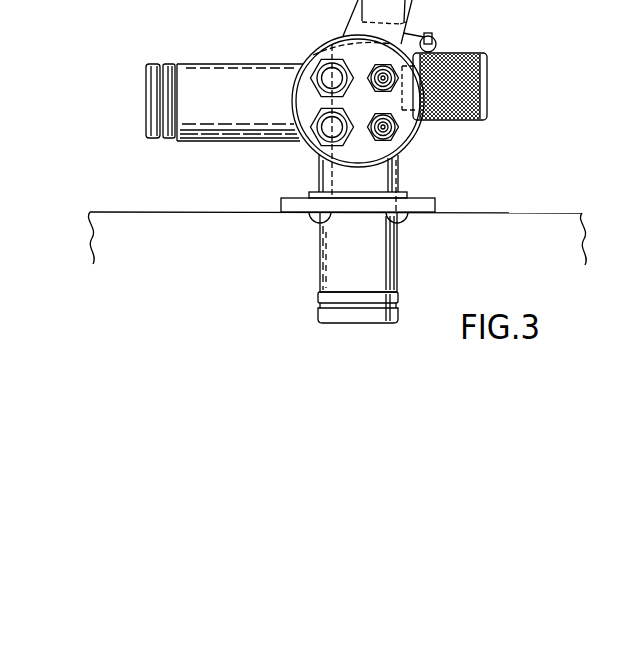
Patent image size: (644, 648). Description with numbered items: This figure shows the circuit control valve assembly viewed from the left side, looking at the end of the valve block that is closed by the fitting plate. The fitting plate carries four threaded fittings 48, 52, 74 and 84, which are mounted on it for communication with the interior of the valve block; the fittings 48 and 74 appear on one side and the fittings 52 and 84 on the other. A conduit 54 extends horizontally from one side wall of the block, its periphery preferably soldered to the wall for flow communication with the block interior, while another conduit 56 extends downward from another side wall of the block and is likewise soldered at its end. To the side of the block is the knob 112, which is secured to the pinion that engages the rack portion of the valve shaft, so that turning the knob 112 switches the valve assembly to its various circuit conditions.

The threaded fitting 48 is at (329, 72).
The threaded fitting 52 is at (390, 68).
The conduit 54 is at (155, 63).
The conduit 56 is at (398, 262).
The threaded fitting 74 is at (329, 130).
The threaded fitting 84 is at (398, 133).
The knob 112 is at (488, 63).